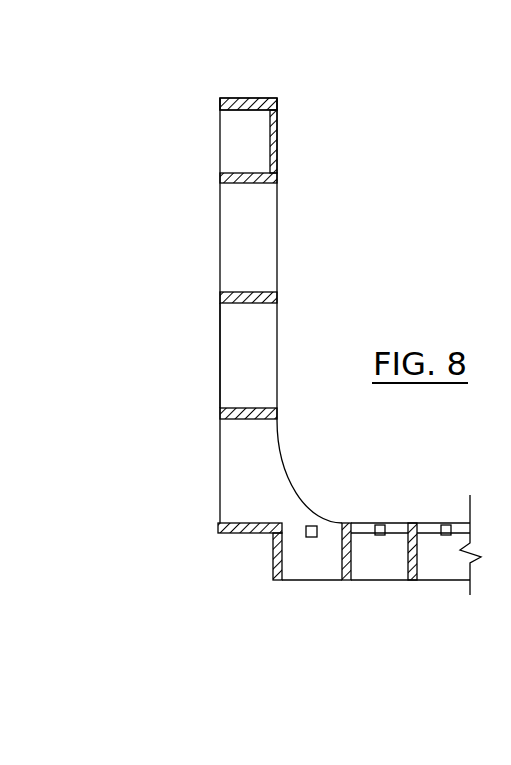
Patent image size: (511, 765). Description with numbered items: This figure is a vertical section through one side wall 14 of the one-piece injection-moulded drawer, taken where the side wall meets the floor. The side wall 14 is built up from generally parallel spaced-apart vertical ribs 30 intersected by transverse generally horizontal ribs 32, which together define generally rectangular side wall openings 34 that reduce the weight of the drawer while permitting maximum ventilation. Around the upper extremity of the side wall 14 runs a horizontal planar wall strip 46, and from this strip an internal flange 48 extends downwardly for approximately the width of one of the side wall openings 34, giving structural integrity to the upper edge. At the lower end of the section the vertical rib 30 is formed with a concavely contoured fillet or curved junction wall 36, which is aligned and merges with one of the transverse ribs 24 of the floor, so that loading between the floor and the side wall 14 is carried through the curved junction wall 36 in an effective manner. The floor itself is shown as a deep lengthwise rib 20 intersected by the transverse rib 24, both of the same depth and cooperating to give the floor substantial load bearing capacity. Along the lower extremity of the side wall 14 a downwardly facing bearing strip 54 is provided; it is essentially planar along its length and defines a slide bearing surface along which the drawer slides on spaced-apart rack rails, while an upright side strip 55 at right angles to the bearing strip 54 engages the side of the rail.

The side wall 14 is at (296, 226).
The horizontal planar wall strip 46 is at (235, 97).
The internal flange 48 is at (278, 153).
The side wall opening 34 is at (250, 269).
The vertical rib 30 is at (227, 356).
The horizontal rib 32 is at (250, 420).
The curved junction wall 36 is at (293, 488).
The bearing strip 54 is at (248, 535).
The upright side strip 55 is at (272, 558).
The lengthwise rib 20 is at (340, 558).
The transverse rib 24 is at (383, 570).